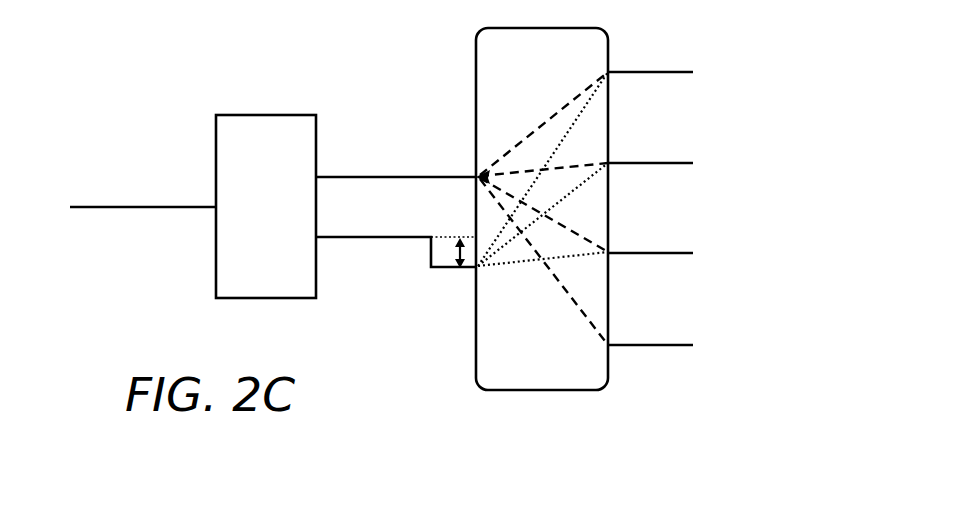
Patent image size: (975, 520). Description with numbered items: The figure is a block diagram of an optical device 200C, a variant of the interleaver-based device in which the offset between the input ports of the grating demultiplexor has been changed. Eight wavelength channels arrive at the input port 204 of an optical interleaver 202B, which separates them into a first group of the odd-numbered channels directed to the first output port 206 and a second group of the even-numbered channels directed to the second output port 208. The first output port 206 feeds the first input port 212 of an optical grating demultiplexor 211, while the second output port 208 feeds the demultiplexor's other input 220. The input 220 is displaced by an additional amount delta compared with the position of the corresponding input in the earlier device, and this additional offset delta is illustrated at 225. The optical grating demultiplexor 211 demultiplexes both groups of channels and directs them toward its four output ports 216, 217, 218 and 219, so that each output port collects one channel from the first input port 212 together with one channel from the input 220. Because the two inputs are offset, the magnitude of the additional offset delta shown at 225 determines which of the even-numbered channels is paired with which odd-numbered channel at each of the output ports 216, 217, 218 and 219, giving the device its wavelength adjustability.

The optical device 200C is at (210, 31).
The input port 204 is at (78, 207).
The optical interleaver 202B is at (292, 288).
The first output port 206 is at (328, 175).
The second output port 208 is at (325, 239).
The first input port 212 is at (465, 175).
The input 220 is at (450, 268).
The additional offset Δ 225 is at (461, 268).
The optical grating demultiplexor 211 is at (568, 373).
The output port 216 is at (693, 72).
The output port 217 is at (693, 163).
The output port 218 is at (693, 253).
The output port 219 is at (678, 347).